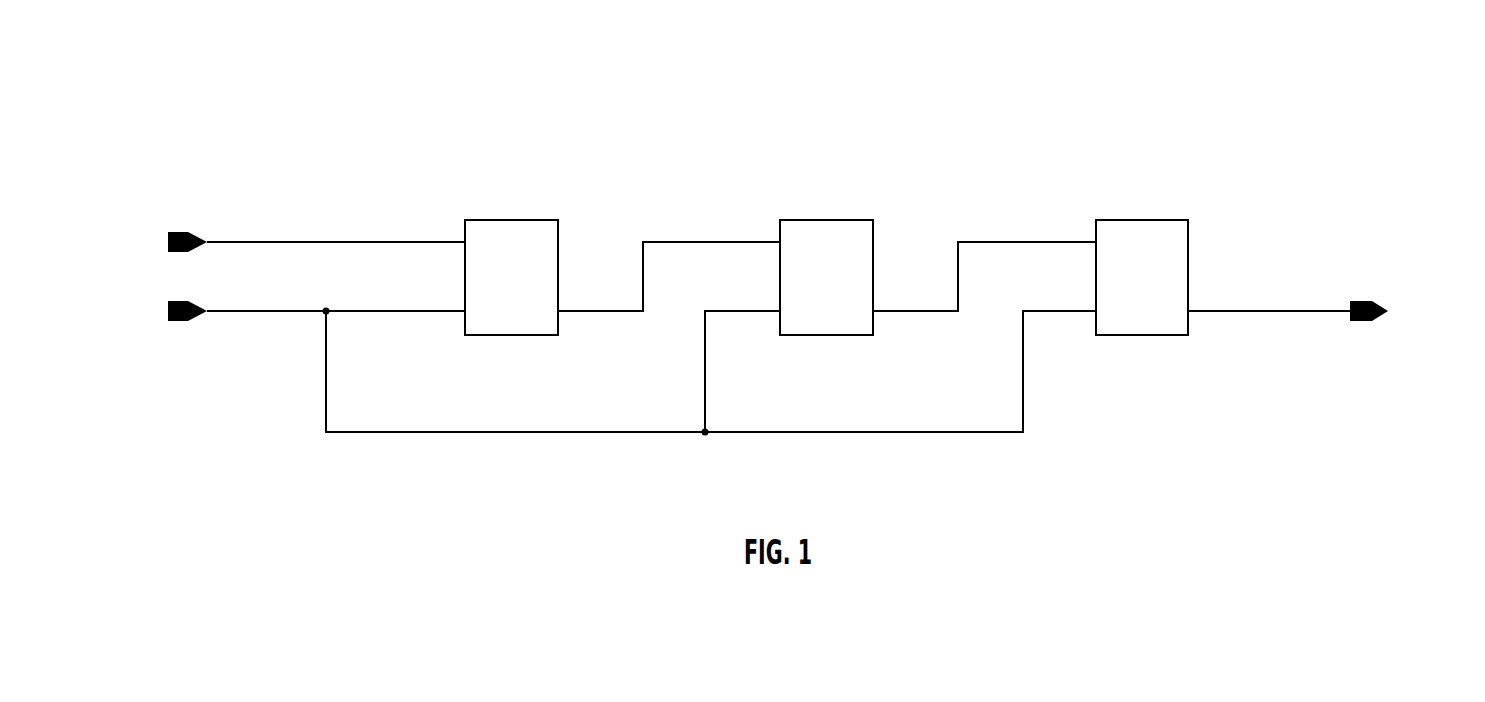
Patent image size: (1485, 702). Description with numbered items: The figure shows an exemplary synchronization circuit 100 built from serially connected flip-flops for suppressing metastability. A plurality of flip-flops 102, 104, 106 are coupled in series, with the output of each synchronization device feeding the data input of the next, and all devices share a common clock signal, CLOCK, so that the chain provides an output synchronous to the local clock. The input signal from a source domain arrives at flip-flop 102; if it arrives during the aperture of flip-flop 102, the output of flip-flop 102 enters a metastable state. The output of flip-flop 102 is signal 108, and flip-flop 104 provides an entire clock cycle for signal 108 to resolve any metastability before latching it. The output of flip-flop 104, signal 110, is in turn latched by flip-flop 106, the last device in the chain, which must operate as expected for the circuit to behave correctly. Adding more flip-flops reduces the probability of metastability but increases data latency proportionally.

The shift register circuit 100 is at (200, 100).
The flip-flop 102 is at (530, 281).
The flip-flop 104 is at (850, 281).
The flip-flop 106 is at (1162, 281).
The signal 108 is at (687, 241).
The second interconnect wire 110 is at (1036, 241).